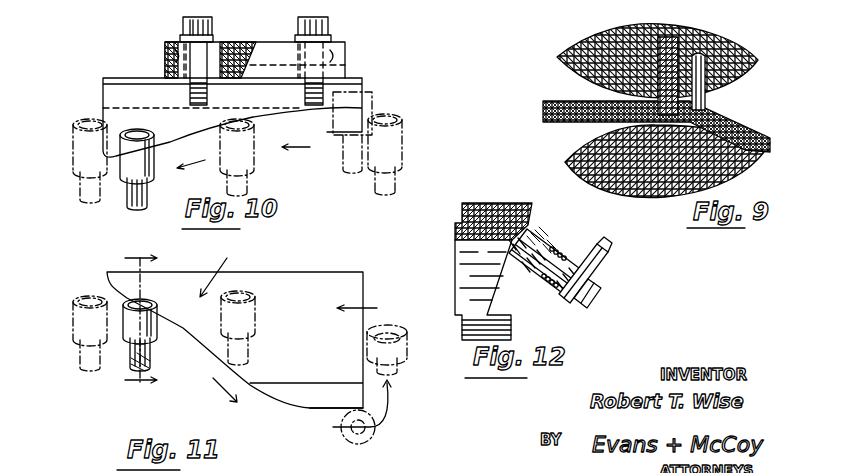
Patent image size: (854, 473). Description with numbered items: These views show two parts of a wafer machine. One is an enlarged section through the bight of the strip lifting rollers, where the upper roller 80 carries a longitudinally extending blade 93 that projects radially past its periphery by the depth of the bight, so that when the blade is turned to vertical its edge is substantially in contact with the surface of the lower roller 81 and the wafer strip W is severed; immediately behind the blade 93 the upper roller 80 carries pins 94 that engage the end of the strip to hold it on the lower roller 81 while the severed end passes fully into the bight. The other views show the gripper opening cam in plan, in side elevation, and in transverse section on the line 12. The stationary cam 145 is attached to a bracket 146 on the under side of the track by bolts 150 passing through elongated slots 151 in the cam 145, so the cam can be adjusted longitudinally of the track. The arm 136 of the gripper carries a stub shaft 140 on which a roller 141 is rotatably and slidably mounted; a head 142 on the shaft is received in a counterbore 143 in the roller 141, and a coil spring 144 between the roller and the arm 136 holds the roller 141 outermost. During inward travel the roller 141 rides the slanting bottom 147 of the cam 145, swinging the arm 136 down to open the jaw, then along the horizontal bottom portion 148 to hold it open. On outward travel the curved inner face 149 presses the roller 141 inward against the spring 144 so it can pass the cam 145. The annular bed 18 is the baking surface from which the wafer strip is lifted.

In FIG. 10, the stationary cam 145 is at (102, 97).
In FIG. 11, the stationary cam 145 is at (332, 272).
In FIG. 12, the stationary cam 145 is at (478, 202).
In FIG. 10, the bracket 146 is at (352, 68).
In FIG. 10, the bolts 150 is at (181, 22).
In FIG. 10, the elongated slots 151 is at (165, 53).
In FIG. 10, the curved inner face 149 is at (212, 146).
In FIG. 11, the curved inner face 149 is at (227, 270).
In FIG. 12, the curved inner face 149 is at (504, 290).
In FIG. 10, the roller 141 is at (128, 173).
In FIG. 11, the roller 141 is at (72, 307).
In FIG. 12, the roller 141 is at (548, 240).
In FIG. 10, the annular bed 18 is at (474, 3).
In FIG. 11, the slanting bottom 147 is at (208, 356).
In FIG. 11, the horizontal bottom portion 148 is at (317, 412).
In FIG. 11, the section line 12— 12 is at (139, 324).
In FIG. 9, the upper roller 80 is at (568, 66).
In FIG. 9, the lower roller 81 is at (583, 151).
In FIG. 9, the workpiece W is at (546, 100).
In FIG. 9, the blade 93 is at (661, 78).
In FIG. 9, the pins 94 is at (706, 98).
In FIG. 12, the head 142 is at (531, 228).
In FIG. 12, the counterbore 143 is at (510, 270).
In FIG. 12, the coil spring 144 is at (586, 250).
In FIG. 12, the arm 136 is at (612, 258).
In FIG. 12, the stub shaft 140 is at (583, 299).